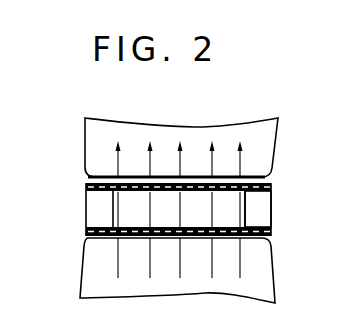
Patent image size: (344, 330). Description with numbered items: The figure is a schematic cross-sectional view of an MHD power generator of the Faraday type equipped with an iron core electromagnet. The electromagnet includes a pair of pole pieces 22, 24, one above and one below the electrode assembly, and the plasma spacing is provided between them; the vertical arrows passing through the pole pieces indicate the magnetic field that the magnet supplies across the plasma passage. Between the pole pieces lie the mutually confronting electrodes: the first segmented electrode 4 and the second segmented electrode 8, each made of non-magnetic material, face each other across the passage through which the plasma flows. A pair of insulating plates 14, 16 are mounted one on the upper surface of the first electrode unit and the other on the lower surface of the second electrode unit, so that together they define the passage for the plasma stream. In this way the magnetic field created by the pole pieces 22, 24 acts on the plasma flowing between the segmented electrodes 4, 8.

The pole piece 22 is at (89, 140).
The pole piece 24 is at (95, 262).
The first segmented electrode 4 is at (181, 215).
The second segmented electrode 8 is at (265, 212).
The insulating plate 14 is at (272, 184).
The insulating plate 16 is at (274, 236).